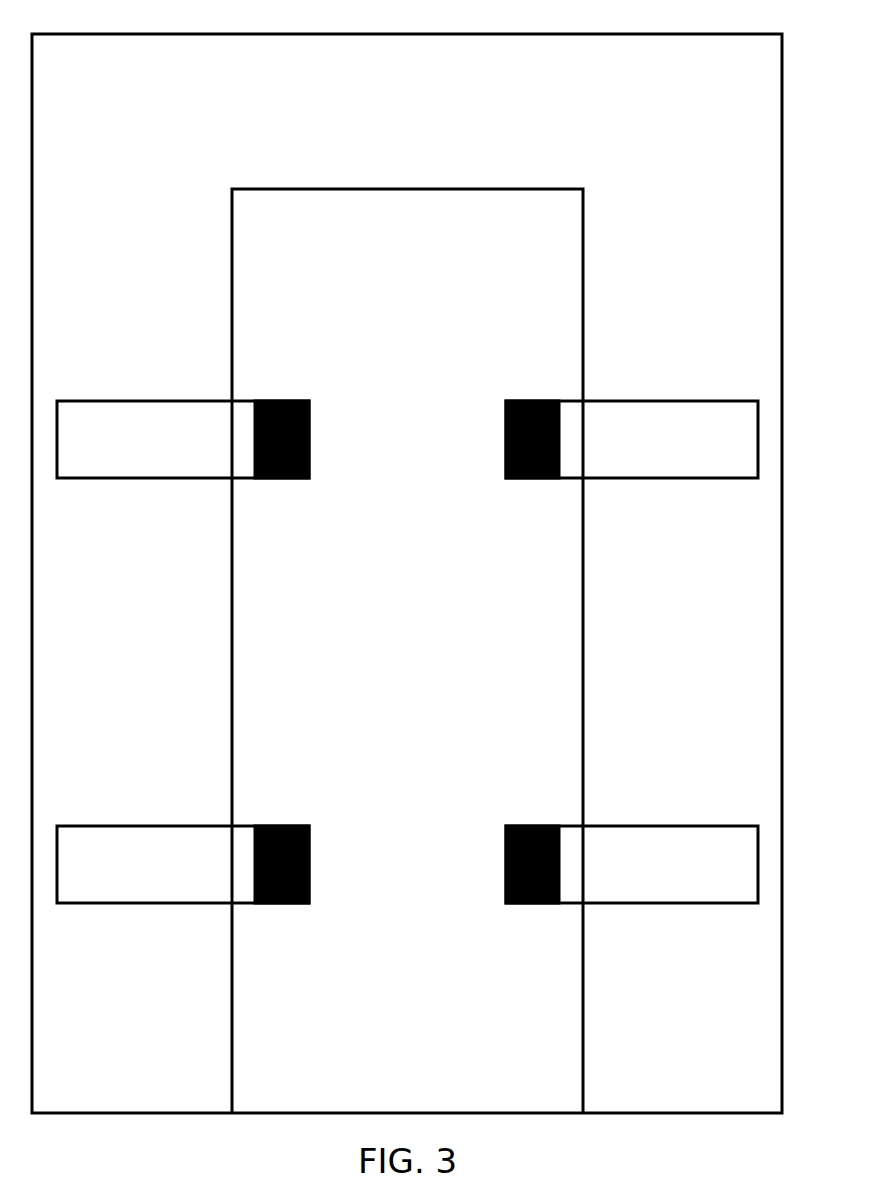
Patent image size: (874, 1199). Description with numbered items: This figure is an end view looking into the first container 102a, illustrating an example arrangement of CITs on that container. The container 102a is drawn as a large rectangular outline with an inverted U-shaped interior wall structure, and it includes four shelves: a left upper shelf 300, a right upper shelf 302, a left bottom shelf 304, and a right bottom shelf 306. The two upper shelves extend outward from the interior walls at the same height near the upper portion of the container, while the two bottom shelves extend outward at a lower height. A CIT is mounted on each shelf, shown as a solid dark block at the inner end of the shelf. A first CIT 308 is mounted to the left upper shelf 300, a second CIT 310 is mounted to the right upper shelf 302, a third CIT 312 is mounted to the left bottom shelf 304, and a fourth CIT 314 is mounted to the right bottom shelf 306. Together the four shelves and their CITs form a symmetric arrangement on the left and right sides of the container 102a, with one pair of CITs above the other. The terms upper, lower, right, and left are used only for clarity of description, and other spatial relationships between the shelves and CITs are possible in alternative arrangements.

The first container 102a is at (420, 34).
The left upper shelf 300 is at (170, 401).
The right upper shelf 302 is at (655, 401).
The left bottom shelf 304 is at (168, 826).
The right bottom shelf 306 is at (652, 826).
The first CIT 308 is at (283, 401).
The second CIT 310 is at (532, 401).
The third CIT 312 is at (280, 826).
The fourth CIT 314 is at (530, 826).